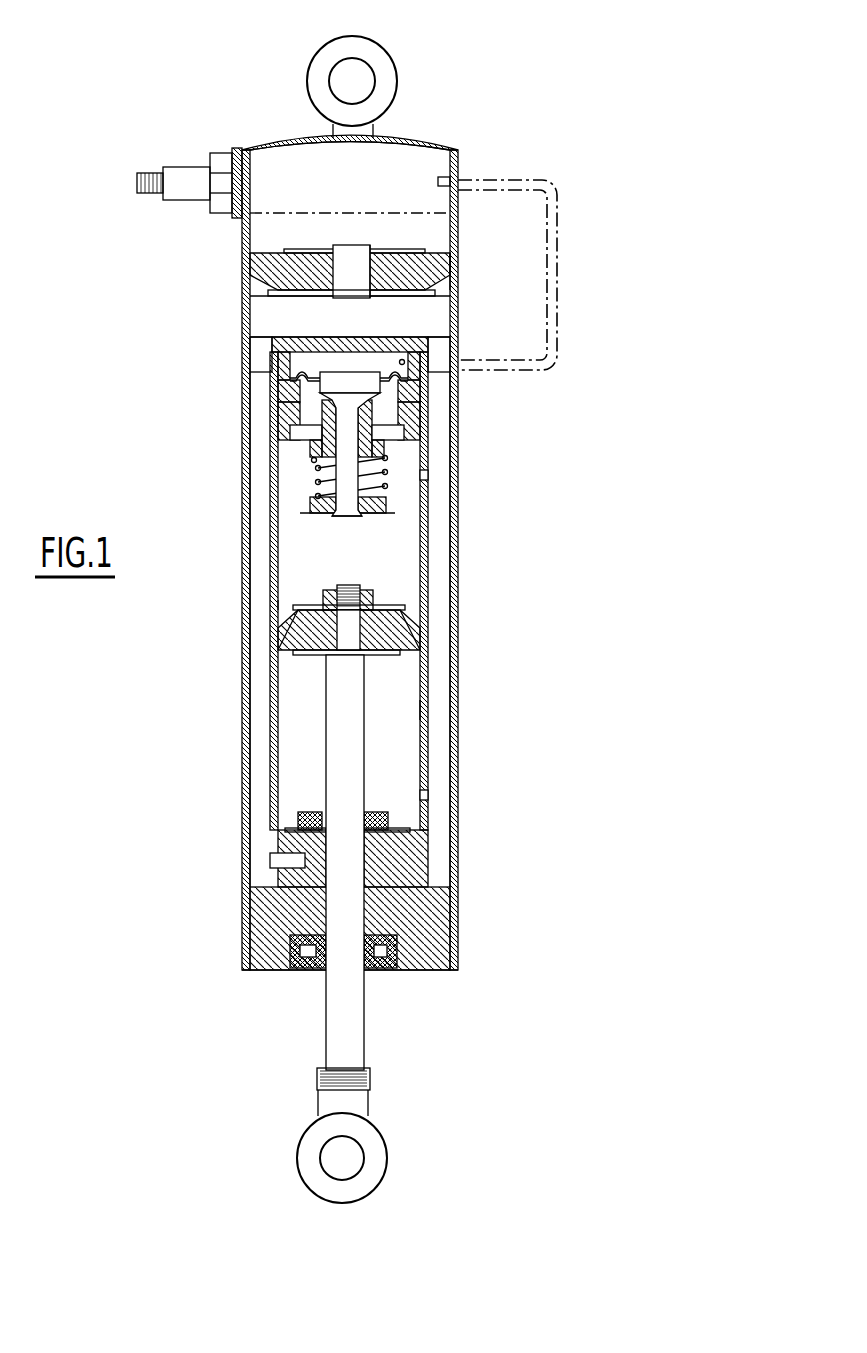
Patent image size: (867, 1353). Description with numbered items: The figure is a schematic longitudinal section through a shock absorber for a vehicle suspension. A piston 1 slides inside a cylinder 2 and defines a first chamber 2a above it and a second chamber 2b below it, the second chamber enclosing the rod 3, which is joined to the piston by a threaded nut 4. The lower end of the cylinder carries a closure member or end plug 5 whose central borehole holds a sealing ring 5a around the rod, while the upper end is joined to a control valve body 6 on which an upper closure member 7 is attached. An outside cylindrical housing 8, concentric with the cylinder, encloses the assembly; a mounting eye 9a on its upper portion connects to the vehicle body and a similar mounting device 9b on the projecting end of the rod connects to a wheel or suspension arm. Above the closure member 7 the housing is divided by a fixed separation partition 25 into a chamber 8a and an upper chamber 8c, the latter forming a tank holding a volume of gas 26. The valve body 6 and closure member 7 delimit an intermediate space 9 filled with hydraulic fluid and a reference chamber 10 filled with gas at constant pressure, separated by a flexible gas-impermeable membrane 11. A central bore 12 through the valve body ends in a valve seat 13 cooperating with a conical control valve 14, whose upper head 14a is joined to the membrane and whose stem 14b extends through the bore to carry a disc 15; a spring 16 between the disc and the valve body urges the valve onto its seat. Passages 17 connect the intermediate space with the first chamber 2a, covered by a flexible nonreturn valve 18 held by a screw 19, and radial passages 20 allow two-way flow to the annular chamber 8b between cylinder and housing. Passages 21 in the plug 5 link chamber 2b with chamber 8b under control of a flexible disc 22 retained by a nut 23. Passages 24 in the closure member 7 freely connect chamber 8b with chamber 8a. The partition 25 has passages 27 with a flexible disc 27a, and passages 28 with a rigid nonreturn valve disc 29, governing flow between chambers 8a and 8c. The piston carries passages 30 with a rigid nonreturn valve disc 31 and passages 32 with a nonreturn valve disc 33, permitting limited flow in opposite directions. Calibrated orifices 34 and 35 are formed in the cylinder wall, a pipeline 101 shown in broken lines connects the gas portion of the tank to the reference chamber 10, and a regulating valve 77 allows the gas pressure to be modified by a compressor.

The piston 1 is at (378, 630).
The cylinder 2 is at (425, 540).
The first chamber 2a is at (383, 563).
The second chamber 2b is at (387, 725).
The rod 3 is at (343, 732).
The threaded nut 4 is at (325, 590).
The closure member or end plug 5 is at (403, 900).
The sealing ring 5a is at (307, 968).
The control valve body 6 is at (413, 417).
The upper closure member or end plug 7 is at (418, 347).
The outside cylindrical housing 8 is at (243, 738).
The chamber 8a is at (415, 315).
The annular chamber 8b is at (260, 610).
The upper chamber 8c is at (392, 168).
The intermediate fluid chamber or space 9 is at (308, 390).
The mounting ring or eye 9a is at (383, 83).
The mounting device 9b is at (373, 1155).
The reference chamber 10 is at (308, 362).
The flexible gas-impermeable membrane 11 is at (393, 373).
The central bore 12 is at (362, 427).
The valve seat 13 is at (310, 403).
The control valve member 14 is at (352, 403).
The upper head 14a is at (332, 373).
The rod or stem portion 14b is at (350, 492).
The disc 15 is at (313, 508).
The spring 16 is at (383, 497).
The passages 17 is at (303, 432).
The nonreturn valve 18 is at (303, 442).
The screw 19 is at (310, 452).
The radial passages 20 is at (417, 395).
The passages 21 is at (282, 862).
The flexible disc 22 is at (307, 827).
The nut 23 is at (383, 815).
The passages 24 is at (262, 343).
The separation partition or wall 25 is at (318, 273).
The gas 26 is at (295, 158).
The passages 27 is at (273, 258).
The flexible disc 27a is at (273, 295).
The passages 28 is at (450, 260).
The rigid nonreturn valve disc 29 is at (398, 248).
The passages 30 is at (285, 638).
The nonreturn valve disc 31 is at (305, 607).
The passages 32 is at (408, 620).
The nonreturn valve disc 33 is at (388, 652).
The calibrated orifice 34 is at (425, 475).
The calibrated orifice 35 is at (422, 793).
The regulating valve 77 is at (192, 188).
The pipeline 101 is at (558, 275).